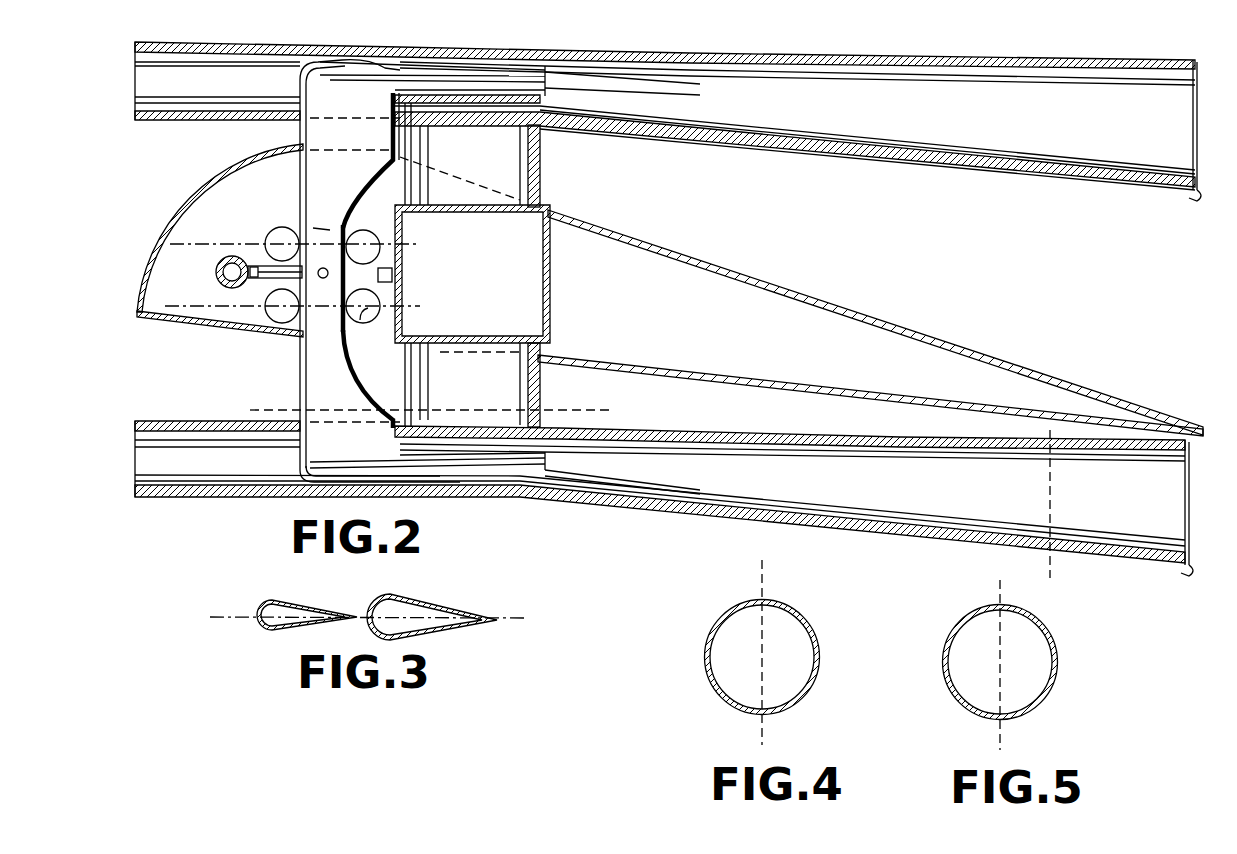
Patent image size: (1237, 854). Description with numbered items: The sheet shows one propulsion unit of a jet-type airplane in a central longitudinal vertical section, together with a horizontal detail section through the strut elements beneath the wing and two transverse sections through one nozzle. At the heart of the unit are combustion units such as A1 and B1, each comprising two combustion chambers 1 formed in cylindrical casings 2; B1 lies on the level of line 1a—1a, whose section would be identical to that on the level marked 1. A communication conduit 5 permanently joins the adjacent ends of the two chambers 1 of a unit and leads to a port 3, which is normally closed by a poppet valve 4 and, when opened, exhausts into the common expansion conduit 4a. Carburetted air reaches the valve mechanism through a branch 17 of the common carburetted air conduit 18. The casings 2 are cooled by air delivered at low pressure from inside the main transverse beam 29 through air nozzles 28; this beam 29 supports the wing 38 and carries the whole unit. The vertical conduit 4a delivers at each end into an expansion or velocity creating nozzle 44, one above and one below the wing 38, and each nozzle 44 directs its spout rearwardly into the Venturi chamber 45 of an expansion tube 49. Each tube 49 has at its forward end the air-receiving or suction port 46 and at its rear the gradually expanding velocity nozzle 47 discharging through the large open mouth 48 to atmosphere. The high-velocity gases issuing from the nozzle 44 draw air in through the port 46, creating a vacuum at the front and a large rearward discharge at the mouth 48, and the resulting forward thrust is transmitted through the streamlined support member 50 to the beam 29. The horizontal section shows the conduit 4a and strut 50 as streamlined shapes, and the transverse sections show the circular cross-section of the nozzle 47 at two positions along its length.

In FIG. 2, the combustion chamber 1 is at (233, 236).
In FIG. 2, the section line 1a- 1a is at (372, 318).
In FIG. 2, the cylindrical casing 2 is at (282, 227).
In FIG. 3, the cylindrical casing 2 is at (228, 617).
In FIG. 4, the cylindrical casing 2 is at (753, 645).
In FIG. 5, the cylindrical casing 2 is at (993, 658).
In FIG. 2, the port 3 is at (271, 410).
In FIG. 2, the poppet valve 4 is at (323, 268).
In FIG. 2, the common expansion conduit 4a is at (335, 130).
In FIG. 3, the common expansion conduit 4a is at (302, 607).
In FIG. 2, the communication conduit 5 is at (1050, 430).
In FIG. 2, the branch 17 is at (244, 260).
In FIG. 2, the common carburetted air conduit 18 is at (216, 270).
In FIG. 2, the air nozzle 28 is at (392, 280).
In FIG. 2, the main transverse beam 29 is at (463, 222).
In FIG. 2, the wing 38 is at (692, 262).
In FIG. 2, the expansion or velocity creating nozzle 44 is at (533, 88).
In FIG. 2, the Venturi chamber 45 is at (635, 68).
In FIG. 2, the air-receiving or suction port 46 is at (140, 82).
In FIG. 2, the expansion and velocity nozzle 47 is at (1105, 172).
In FIG. 4, the expansion and velocity nozzle 47 is at (790, 609).
In FIG. 5, the expansion and velocity nozzle 47 is at (945, 636).
In FIG. 2, the open mouth 48 is at (1193, 194).
In FIG. 2, the expansion tube 49 is at (590, 128).
In FIG. 2, the streamlined support member 50 is at (540, 192).
In FIG. 3, the streamlined support member 50 is at (425, 599).
In FIG. 2, the combustion unit A1 is at (268, 227).
In FIG. 2, the combustion unit B1 is at (248, 324).